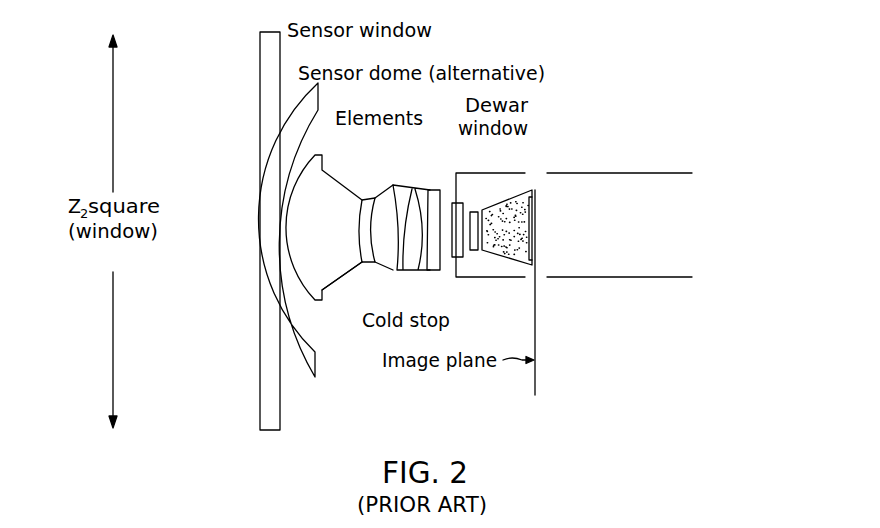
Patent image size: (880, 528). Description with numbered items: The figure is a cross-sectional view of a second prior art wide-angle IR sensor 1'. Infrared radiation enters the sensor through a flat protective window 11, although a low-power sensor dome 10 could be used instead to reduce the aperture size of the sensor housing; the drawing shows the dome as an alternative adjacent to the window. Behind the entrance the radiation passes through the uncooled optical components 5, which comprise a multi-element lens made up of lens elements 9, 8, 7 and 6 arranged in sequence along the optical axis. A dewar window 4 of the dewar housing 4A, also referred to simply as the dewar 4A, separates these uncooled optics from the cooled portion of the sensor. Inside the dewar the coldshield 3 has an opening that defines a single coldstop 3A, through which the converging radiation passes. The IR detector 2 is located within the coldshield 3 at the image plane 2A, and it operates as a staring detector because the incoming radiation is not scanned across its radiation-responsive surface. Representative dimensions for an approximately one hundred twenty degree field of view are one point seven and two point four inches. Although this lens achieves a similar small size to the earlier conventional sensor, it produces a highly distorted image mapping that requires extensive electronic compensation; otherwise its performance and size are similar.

The second prior art sensor 1' is at (613, 185).
The IR detector 2 is at (535, 238).
The image plane 2A is at (535, 388).
The coldshield 3 is at (510, 198).
The coldstop 3A is at (480, 278).
The dewar window 4 is at (500, 187).
The dewar housing 4A is at (668, 173).
The uncooled optical components 5 is at (346, 272).
The lens element 6 is at (433, 190).
The lens element 7 is at (403, 194).
The lens element 8 is at (367, 198).
The lens element 9 is at (323, 163).
The sensor dome 10 is at (322, 100).
The window 11 is at (281, 56).